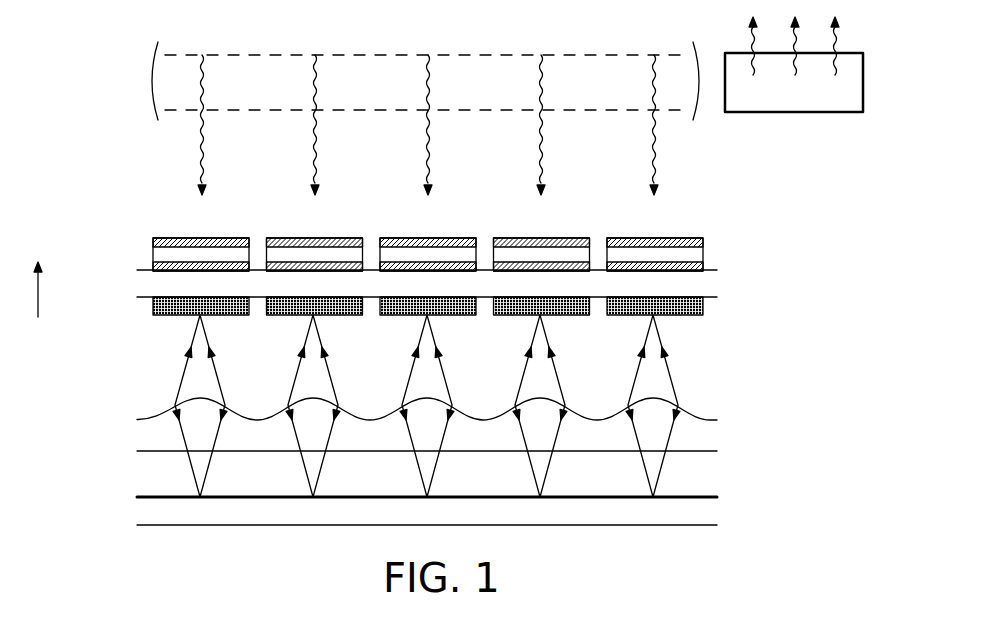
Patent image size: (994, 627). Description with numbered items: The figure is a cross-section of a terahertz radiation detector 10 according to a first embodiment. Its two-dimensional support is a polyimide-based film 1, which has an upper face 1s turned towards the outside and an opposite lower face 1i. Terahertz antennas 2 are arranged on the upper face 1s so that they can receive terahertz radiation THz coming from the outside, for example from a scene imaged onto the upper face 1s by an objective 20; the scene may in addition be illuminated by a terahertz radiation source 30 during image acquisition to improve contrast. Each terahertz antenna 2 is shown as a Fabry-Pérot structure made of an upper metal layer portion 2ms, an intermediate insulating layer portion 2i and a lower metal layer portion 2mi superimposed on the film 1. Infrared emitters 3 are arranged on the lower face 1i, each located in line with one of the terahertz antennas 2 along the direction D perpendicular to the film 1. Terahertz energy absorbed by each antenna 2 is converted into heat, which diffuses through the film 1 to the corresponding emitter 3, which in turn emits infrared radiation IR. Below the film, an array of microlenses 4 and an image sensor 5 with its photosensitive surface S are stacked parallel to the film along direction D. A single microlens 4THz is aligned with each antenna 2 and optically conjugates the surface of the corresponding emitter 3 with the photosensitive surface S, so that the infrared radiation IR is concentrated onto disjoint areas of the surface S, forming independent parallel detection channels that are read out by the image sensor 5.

The terahertz radiation detector 10 is at (421, 347).
The objective 20 is at (387, 118).
The terahertz radiation source 30 is at (830, 113).
The polyimide-based film 1 is at (428, 276).
The upper face of the film 1s is at (143, 268).
The lower face of the film 1i is at (400, 323).
The terahertz antennas 2 is at (487, 207).
The upper metal layer portion 2ms is at (650, 238).
The intermediate insulating layer portion 2i is at (665, 253).
The lower metal layer portion 2mi is at (685, 262).
The infrared emitters 3 is at (183, 315).
The array of microlenses 4 is at (452, 404).
The microlens 4THz is at (435, 387).
The photosensitive surface S is at (700, 494).
The image sensor 5 is at (713, 512).
The infrared radiation IR is at (217, 373).
The terahertz radiation THz is at (654, 127).
The direction perpendicular to the film D is at (25, 290).